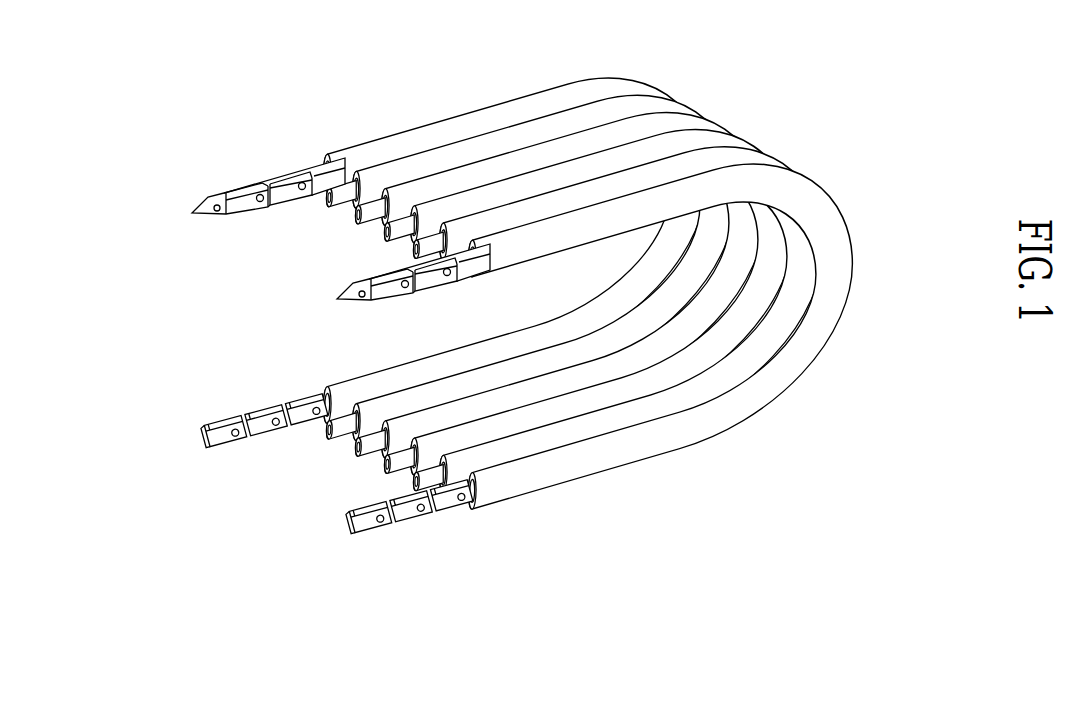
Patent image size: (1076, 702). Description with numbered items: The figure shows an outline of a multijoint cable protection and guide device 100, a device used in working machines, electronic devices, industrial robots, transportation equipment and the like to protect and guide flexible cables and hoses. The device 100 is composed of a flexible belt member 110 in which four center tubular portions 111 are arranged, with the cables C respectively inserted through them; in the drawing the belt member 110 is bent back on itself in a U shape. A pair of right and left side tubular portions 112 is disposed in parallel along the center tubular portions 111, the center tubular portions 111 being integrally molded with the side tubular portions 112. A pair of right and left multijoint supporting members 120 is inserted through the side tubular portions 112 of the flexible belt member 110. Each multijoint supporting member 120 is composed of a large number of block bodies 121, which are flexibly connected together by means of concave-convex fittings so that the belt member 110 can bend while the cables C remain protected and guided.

The multijoint cable protection and guide device 100 is at (534, 306).
The flexible belt member 110 is at (607, 274).
The center tubular portions 111 is at (762, 160).
The side tubular portions 112 is at (596, 276).
The multijoint supporting member 120 is at (353, 293).
The block bodies 121 is at (468, 500).
The cables C is at (421, 246).